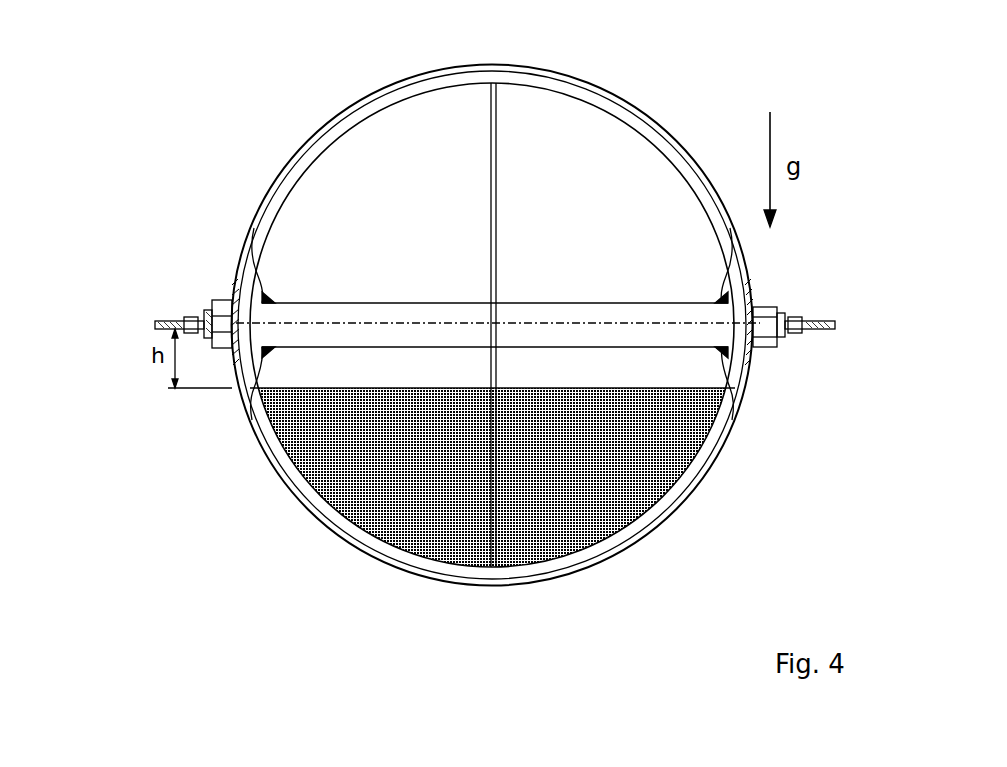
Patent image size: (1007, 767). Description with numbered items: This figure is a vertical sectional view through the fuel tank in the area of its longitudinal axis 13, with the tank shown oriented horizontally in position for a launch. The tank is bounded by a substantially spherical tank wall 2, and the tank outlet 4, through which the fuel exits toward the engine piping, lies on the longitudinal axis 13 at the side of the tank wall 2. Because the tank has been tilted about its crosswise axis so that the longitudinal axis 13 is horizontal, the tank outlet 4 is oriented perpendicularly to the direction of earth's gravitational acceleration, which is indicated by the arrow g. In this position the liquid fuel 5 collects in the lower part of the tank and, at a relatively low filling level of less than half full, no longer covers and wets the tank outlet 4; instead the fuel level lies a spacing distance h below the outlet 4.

The tank wall 2 is at (277, 167).
The tank outlet 4 is at (197, 317).
The fuel 5 is at (595, 483).
The longitudinal axis 13 is at (577, 327).